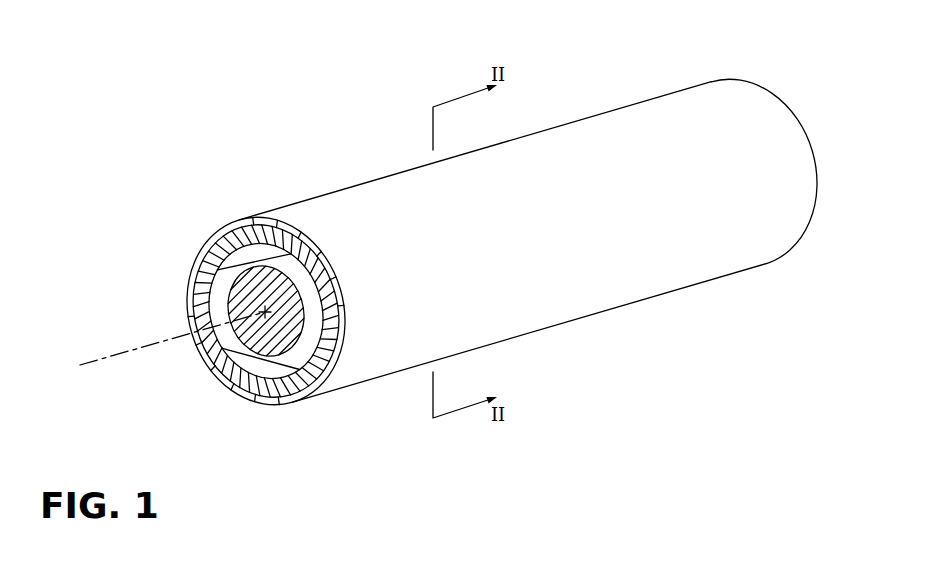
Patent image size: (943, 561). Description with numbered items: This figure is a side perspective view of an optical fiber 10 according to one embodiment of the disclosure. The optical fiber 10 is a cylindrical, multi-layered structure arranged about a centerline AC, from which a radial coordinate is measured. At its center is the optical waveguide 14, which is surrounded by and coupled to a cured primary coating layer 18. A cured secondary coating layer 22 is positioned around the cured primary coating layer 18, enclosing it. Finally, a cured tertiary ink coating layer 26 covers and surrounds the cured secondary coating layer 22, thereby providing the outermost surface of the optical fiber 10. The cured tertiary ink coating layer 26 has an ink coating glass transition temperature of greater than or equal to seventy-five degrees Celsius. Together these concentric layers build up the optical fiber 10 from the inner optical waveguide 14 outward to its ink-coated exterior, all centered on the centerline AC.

The optical fiber 10 is at (356, 112).
The optical waveguide 14 is at (190, 288).
The cured primary coating layer 18 is at (197, 257).
The cured secondary coating layer 22 is at (238, 233).
The cured tertiary ink coating layer 26 is at (284, 227).
The centerline AC is at (125, 350).